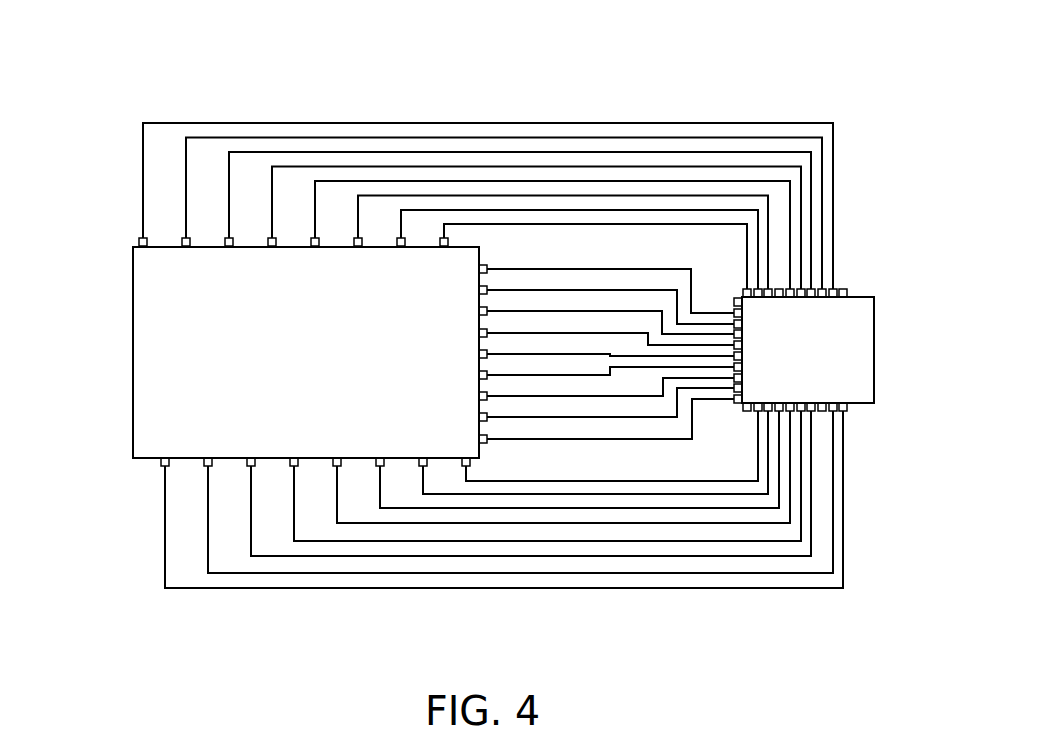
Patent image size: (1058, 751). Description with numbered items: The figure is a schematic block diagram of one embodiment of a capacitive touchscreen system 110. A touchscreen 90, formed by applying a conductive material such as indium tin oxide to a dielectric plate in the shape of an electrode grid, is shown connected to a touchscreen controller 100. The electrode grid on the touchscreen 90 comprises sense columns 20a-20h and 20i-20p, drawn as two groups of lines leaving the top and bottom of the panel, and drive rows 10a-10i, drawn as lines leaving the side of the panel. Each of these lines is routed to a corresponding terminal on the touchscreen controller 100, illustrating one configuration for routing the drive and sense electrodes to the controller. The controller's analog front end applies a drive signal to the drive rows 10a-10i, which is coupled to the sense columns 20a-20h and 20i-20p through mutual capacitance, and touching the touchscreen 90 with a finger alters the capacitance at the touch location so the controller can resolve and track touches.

The capacitive touchscreen system 110 is at (113, 92).
The touchscreen 90 is at (160, 335).
The touchscreen controller 100 is at (874, 351).
The sense columns 20a-20h is at (577, 108).
The drive rows 10a-10i is at (593, 250).
The sense columns 20i-20p is at (577, 593).